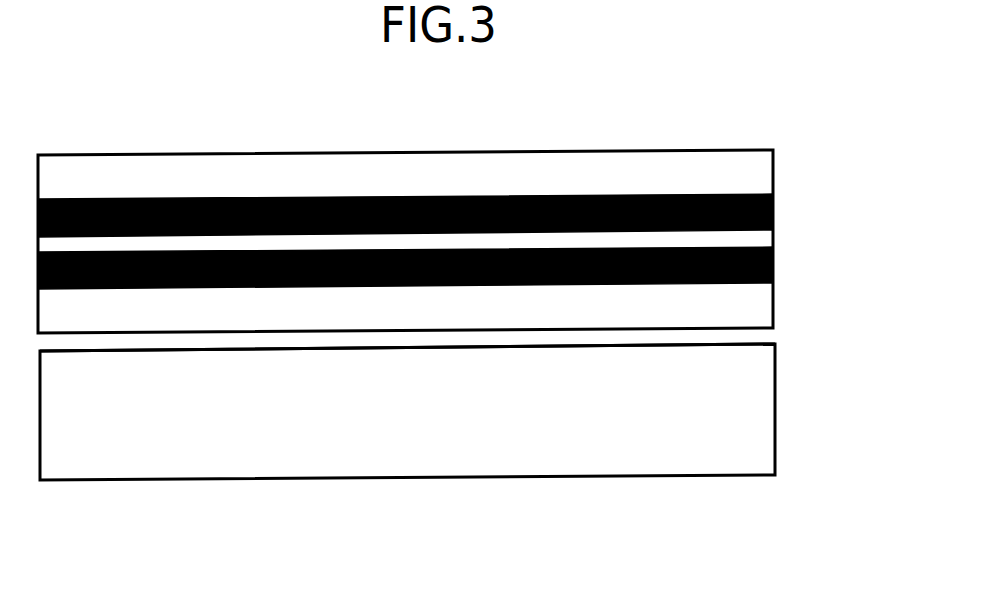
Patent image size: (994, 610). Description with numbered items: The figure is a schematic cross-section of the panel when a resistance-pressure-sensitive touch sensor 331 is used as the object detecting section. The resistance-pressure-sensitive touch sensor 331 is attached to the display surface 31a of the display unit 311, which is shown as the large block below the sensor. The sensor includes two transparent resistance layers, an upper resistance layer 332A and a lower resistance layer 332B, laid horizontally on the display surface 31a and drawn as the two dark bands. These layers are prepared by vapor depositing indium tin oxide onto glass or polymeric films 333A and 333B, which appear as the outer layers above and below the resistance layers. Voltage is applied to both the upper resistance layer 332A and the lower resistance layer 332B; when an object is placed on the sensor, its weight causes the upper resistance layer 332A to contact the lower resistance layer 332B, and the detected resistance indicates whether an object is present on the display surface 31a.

The resistance-pressure-sensitive touch sensor 331 is at (679, 140).
The glass or polymeric film 333A is at (765, 168).
The upper resistance layer 332A is at (773, 207).
The lower resistance layer 332B is at (773, 265).
The glass or polymeric film 333B is at (768, 305).
The display surface 31a is at (768, 338).
The display unit 311 is at (658, 477).